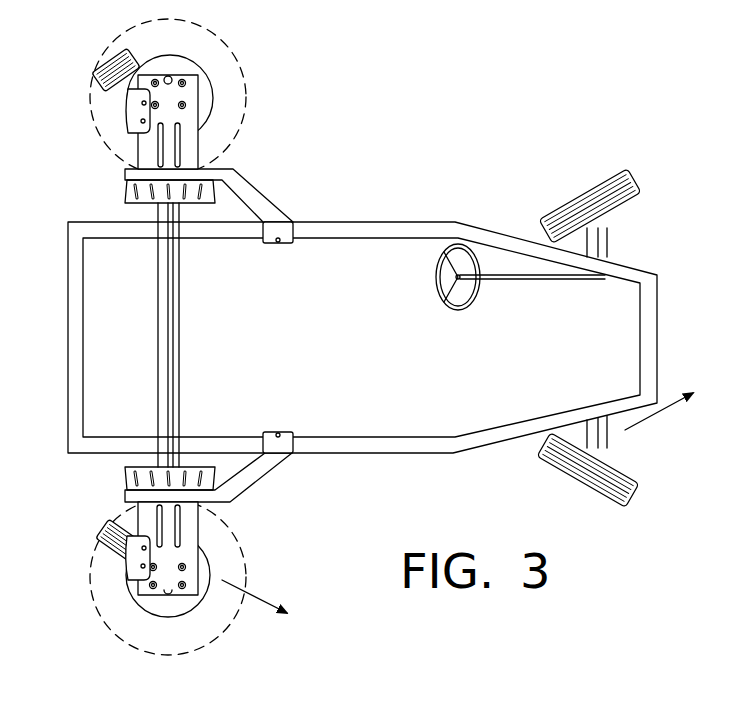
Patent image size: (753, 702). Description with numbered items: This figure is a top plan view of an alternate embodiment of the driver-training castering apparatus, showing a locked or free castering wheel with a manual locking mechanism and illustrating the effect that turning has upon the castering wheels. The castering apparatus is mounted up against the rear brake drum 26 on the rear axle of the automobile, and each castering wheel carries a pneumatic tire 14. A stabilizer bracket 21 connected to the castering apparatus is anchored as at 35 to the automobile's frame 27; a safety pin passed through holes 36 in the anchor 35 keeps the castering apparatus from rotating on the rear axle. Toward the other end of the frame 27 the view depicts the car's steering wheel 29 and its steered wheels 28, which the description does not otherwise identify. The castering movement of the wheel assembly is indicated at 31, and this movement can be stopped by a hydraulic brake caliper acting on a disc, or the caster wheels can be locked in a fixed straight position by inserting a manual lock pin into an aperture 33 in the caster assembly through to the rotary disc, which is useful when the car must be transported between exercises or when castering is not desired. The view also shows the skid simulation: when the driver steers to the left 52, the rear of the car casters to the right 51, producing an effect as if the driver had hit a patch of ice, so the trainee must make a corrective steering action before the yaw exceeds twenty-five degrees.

The pneumatic tire 14 is at (102, 60).
The stabilizer bracket 21 is at (283, 220).
The rear brake drum 26 is at (127, 192).
The frame 27 is at (382, 438).
The rear wheel 28 is at (580, 193).
The steering wheel 29 is at (472, 307).
The castering movement 31 is at (243, 70).
The aperture 33 is at (167, 590).
The anchor 35 is at (288, 243).
The holes 36 is at (273, 245).
The castering to the right 51 is at (263, 593).
The steering to the left 52 is at (668, 408).